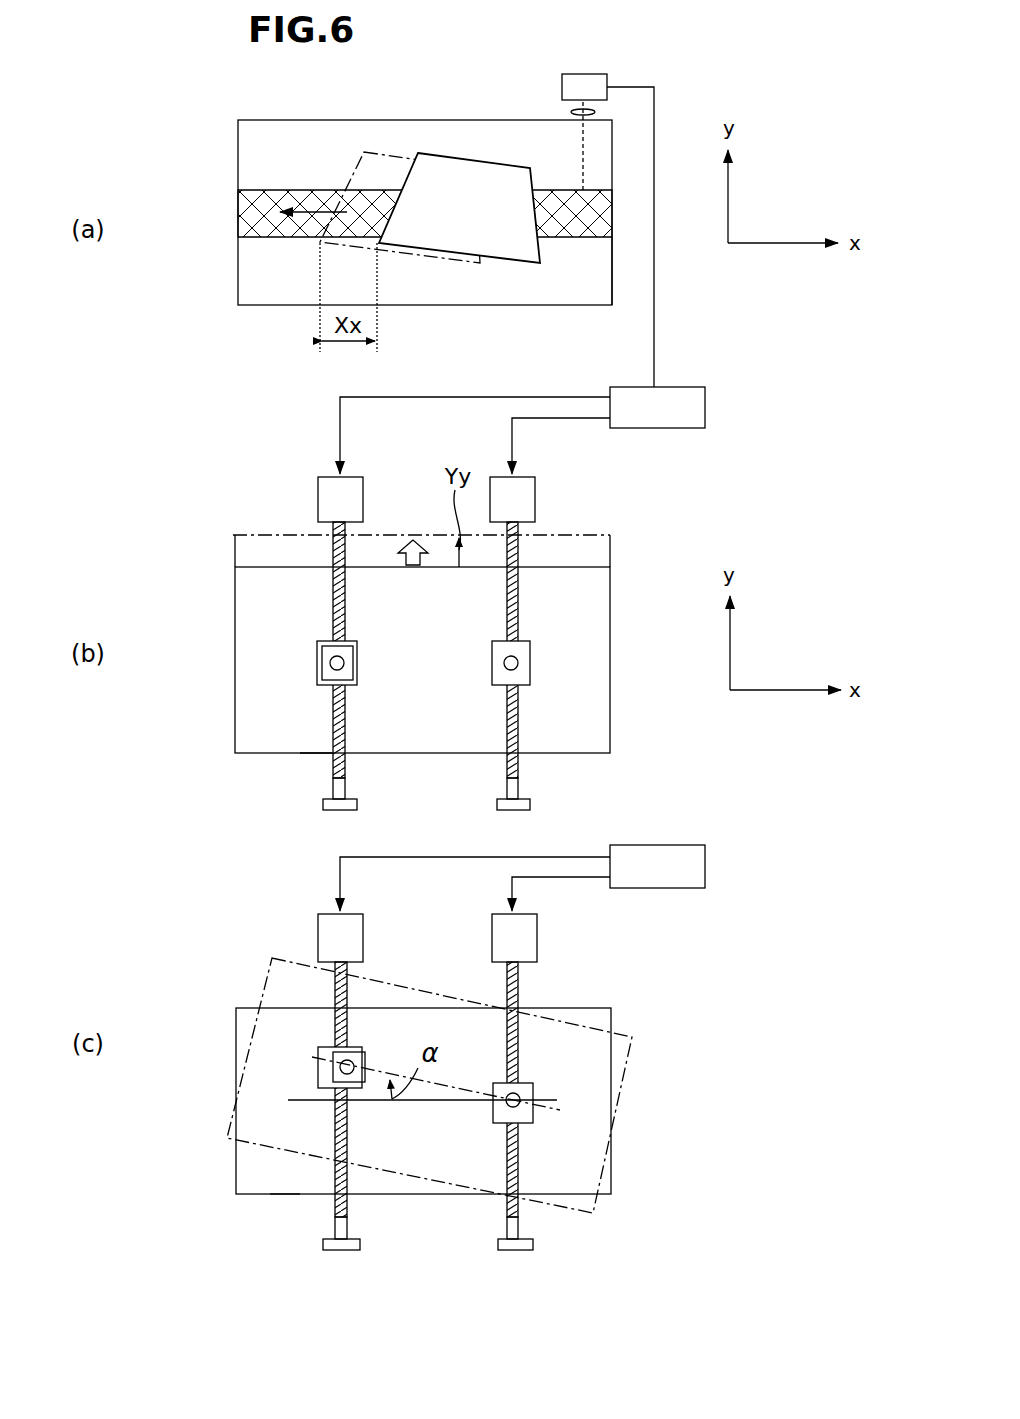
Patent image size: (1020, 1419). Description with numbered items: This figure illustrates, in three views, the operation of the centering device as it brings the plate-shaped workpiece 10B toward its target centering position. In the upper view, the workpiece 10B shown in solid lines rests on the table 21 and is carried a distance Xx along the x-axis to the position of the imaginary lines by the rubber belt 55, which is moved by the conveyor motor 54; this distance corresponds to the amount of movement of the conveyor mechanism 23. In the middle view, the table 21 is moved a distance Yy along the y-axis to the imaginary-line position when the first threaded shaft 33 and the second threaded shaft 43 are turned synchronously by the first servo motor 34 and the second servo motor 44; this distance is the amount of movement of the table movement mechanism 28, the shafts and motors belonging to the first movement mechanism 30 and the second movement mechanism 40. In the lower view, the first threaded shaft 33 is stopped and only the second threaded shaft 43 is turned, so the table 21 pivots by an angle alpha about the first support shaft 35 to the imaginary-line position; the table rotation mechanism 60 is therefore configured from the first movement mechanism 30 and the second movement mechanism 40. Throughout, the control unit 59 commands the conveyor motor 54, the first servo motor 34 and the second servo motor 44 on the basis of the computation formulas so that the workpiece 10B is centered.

The plate-shaped workpiece 10B is at (498, 178).
The table 21 is at (272, 310).
The conveyor mechanism 23 is at (618, 244).
The table movement mechanism 28 is at (316, 741).
The first movement mechanism 30 is at (510, 813).
The first threaded shaft 33 is at (518, 600).
The first servo motor 34 is at (522, 497).
The first support shaft 35 is at (518, 1107).
The second movement mechanism 40 is at (337, 813).
The second threaded shaft 43 is at (333, 611).
The second servo motor 44 is at (328, 502).
The conveyor motor 54 is at (585, 80).
The rubber belt 55 is at (238, 217).
The control unit 59 is at (705, 407).
The table rotation mechanism 60 is at (287, 1204).